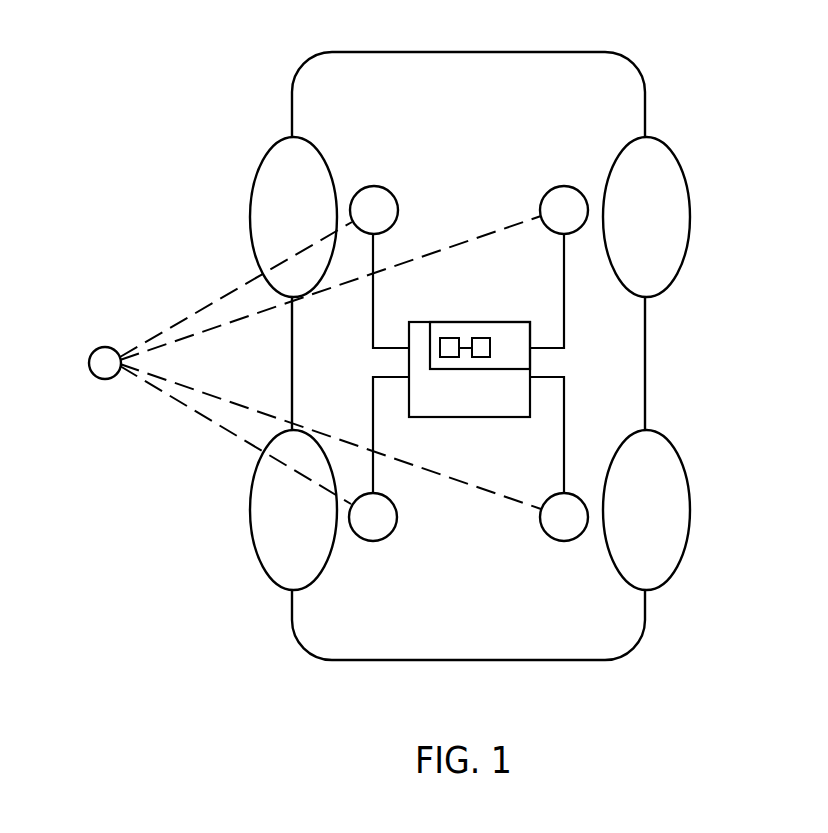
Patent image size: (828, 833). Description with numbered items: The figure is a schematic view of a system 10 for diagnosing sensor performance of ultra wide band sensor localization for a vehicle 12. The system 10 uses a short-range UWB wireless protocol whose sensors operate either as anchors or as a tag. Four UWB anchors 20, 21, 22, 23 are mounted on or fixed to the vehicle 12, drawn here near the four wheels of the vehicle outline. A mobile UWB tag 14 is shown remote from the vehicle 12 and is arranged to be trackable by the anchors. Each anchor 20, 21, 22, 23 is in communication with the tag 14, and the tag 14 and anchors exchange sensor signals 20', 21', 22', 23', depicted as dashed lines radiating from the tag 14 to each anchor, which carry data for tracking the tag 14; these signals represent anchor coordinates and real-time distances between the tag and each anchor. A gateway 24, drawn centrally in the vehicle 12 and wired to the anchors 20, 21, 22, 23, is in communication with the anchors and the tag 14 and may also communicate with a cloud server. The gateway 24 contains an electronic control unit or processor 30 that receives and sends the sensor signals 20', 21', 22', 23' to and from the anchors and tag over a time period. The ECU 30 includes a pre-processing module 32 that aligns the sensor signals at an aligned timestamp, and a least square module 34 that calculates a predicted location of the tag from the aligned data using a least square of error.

The system 10 is at (205, 56).
The vehicle 12 is at (292, 116).
The UWB tag 14 is at (100, 347).
The UWB anchor 20 is at (379, 267).
The UWB anchor 21 is at (559, 267).
The UWB anchor 22 is at (379, 459).
The UWB anchor 23 is at (559, 459).
The sensor signal 20' is at (236, 289).
The sensor signal 21' is at (330, 252).
The sensor signal 22' is at (235, 435).
The sensor signal 23' is at (330, 468).
The gateway 24 is at (478, 408).
The electronic control unit 30 is at (466, 322).
The pre-processing module 32 is at (452, 338).
The least square module 34 is at (484, 338).